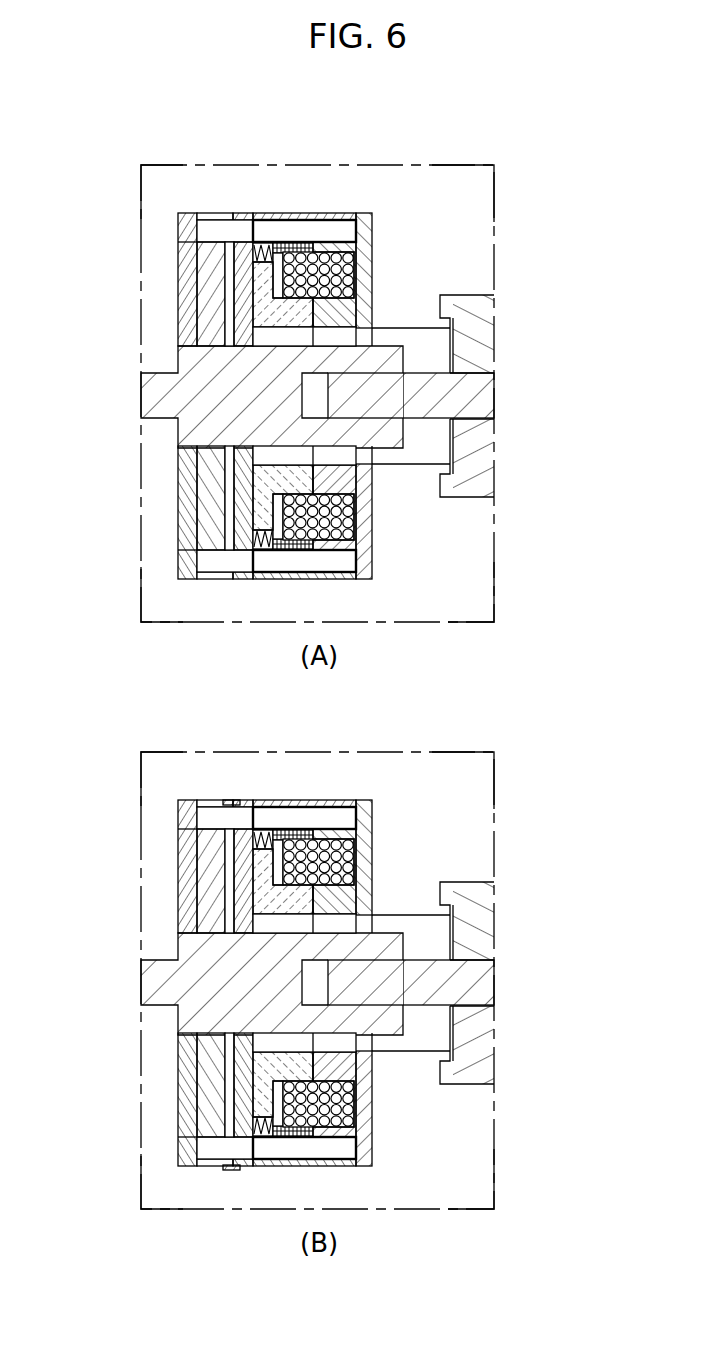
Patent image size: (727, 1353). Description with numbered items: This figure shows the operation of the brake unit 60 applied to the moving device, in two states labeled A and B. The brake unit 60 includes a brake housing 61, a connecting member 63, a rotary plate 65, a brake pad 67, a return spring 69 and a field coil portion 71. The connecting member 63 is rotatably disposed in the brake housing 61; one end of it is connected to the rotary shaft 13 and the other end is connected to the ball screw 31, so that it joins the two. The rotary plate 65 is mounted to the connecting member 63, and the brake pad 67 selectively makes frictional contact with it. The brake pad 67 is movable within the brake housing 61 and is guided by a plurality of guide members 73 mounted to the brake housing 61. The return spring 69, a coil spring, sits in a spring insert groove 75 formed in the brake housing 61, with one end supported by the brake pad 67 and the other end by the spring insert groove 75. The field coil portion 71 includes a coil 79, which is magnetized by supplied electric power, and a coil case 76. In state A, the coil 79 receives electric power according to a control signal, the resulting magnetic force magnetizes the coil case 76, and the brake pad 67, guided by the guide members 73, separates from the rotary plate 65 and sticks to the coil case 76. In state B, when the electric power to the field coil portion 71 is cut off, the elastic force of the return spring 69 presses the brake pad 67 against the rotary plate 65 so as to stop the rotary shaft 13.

The brake unit 60 is at (335, 103).
The rotary shaft 13 is at (164, 418).
The ball screw 31 is at (422, 405).
The brake housing 61 is at (378, 261).
The connecting member 63 is at (373, 360).
The rotary plate 65 is at (208, 283).
The brake pad 67 is at (243, 318).
The return spring 69 is at (255, 250).
The field coil portion 71 is at (317, 242).
The guide member 73 is at (210, 228).
The spring insert groove 75 is at (263, 512).
The coil case 76 is at (283, 317).
The coil 79 is at (338, 262).